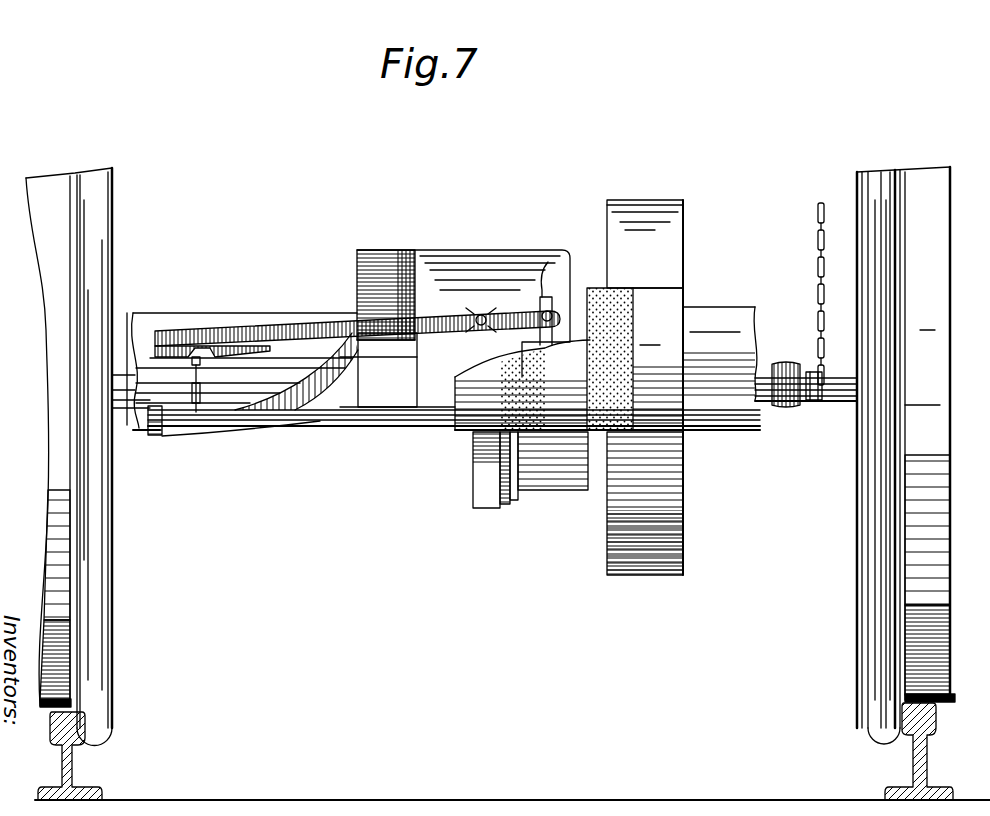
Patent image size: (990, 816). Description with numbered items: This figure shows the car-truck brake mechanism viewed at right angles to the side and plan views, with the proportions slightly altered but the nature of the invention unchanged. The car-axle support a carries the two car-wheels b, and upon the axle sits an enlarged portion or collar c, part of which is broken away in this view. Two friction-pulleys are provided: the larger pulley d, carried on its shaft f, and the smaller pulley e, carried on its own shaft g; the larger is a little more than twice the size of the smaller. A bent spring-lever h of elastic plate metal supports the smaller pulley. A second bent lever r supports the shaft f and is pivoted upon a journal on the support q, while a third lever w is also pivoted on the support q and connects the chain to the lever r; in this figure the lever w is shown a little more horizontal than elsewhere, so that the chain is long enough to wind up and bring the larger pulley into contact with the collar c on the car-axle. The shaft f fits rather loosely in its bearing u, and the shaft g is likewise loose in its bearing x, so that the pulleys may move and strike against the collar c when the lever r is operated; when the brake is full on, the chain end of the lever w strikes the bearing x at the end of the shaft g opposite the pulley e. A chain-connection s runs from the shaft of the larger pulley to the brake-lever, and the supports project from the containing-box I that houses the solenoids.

The car-axle support a is at (164, 320).
The car-wheels b is at (490, 456).
The collar c is at (635, 359).
The friction-pulley d is at (645, 244).
The friction-pulley e is at (553, 471).
The shaft f is at (808, 399).
The shaft g is at (322, 425).
The bent lever h is at (513, 508).
The containing-box I is at (463, 305).
The support q is at (498, 314).
The second bent lever r is at (548, 303).
The chain-connection s is at (813, 294).
The bearing u is at (790, 370).
The third lever w is at (357, 332).
The bearing x is at (152, 442).